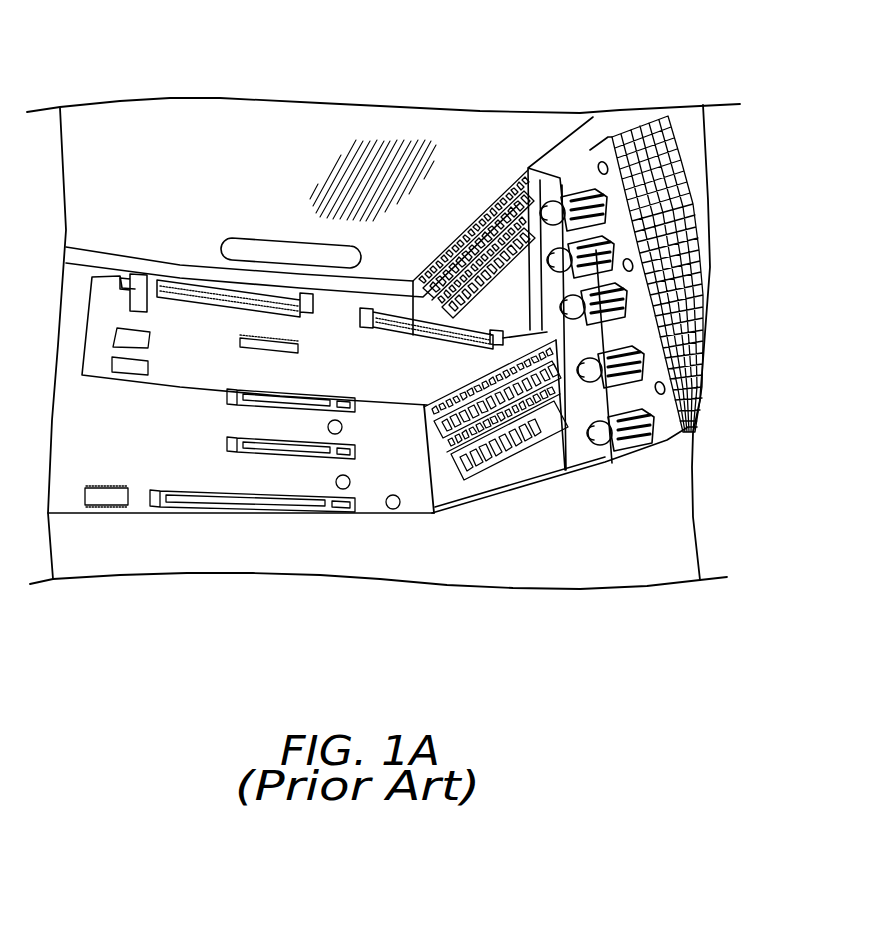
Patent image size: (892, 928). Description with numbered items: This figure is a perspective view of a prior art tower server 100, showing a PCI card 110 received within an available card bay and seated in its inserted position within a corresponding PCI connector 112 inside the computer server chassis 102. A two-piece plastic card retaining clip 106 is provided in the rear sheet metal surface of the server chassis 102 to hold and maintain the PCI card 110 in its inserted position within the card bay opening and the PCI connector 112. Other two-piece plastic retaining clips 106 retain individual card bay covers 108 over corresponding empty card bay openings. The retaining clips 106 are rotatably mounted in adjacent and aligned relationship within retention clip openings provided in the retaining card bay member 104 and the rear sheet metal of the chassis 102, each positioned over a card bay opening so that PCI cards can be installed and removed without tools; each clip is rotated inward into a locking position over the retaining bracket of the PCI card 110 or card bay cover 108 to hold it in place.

The tower server 100 is at (718, 48).
The computer server chassis 102 is at (693, 150).
The retaining card bay member 104 is at (670, 432).
The two-piece plastic card retaining clip 106 is at (640, 328).
The card bay cover 108 is at (513, 190).
The PCI card 110 is at (185, 283).
The PCI connector 112 is at (230, 398).